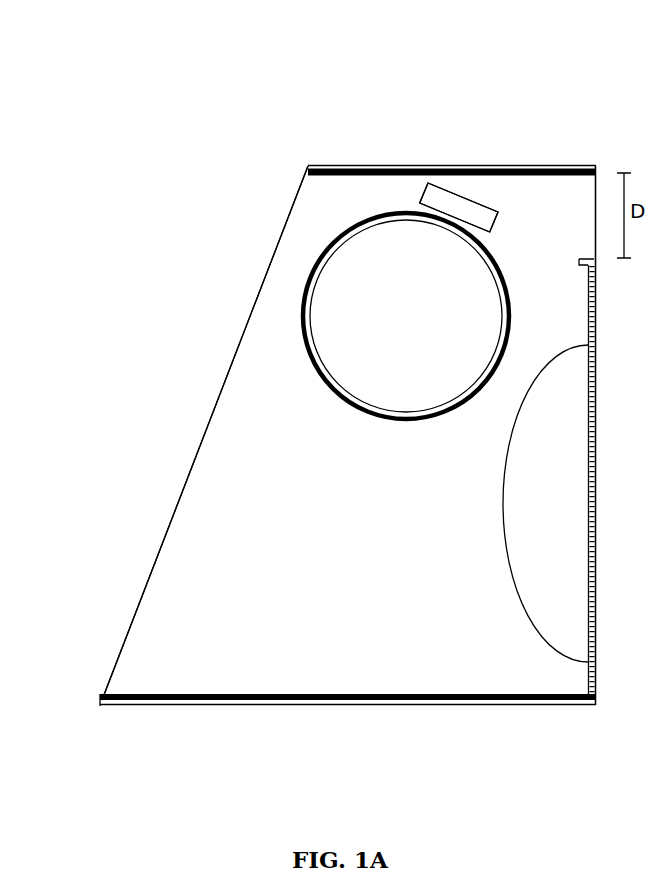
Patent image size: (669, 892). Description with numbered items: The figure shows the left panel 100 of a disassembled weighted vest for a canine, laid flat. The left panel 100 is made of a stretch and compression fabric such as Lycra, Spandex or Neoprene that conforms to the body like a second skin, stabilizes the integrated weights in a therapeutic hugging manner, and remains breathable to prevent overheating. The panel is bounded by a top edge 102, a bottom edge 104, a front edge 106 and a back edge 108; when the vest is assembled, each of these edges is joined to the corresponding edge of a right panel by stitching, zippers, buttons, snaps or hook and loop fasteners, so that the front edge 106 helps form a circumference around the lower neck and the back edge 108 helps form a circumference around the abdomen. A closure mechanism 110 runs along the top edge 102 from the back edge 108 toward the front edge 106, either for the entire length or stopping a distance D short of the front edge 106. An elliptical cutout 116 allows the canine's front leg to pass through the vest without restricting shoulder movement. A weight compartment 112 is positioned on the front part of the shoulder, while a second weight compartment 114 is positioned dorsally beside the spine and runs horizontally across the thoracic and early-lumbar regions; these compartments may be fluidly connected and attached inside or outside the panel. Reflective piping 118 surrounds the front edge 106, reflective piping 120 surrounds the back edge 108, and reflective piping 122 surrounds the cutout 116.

The left panel 100 is at (251, 142).
The top edge 102 is at (597, 207).
The bottom edge 104 is at (207, 429).
The front edge 106 is at (411, 162).
The back edge 108 is at (330, 704).
The closure mechanism 110 is at (597, 447).
The weight compartment 112 is at (463, 211).
The weight compartment 114 is at (556, 549).
The cutout 116 is at (317, 292).
The reflective piping 118 is at (439, 174).
The reflective piping 120 is at (197, 700).
The reflective piping 122 is at (334, 241).